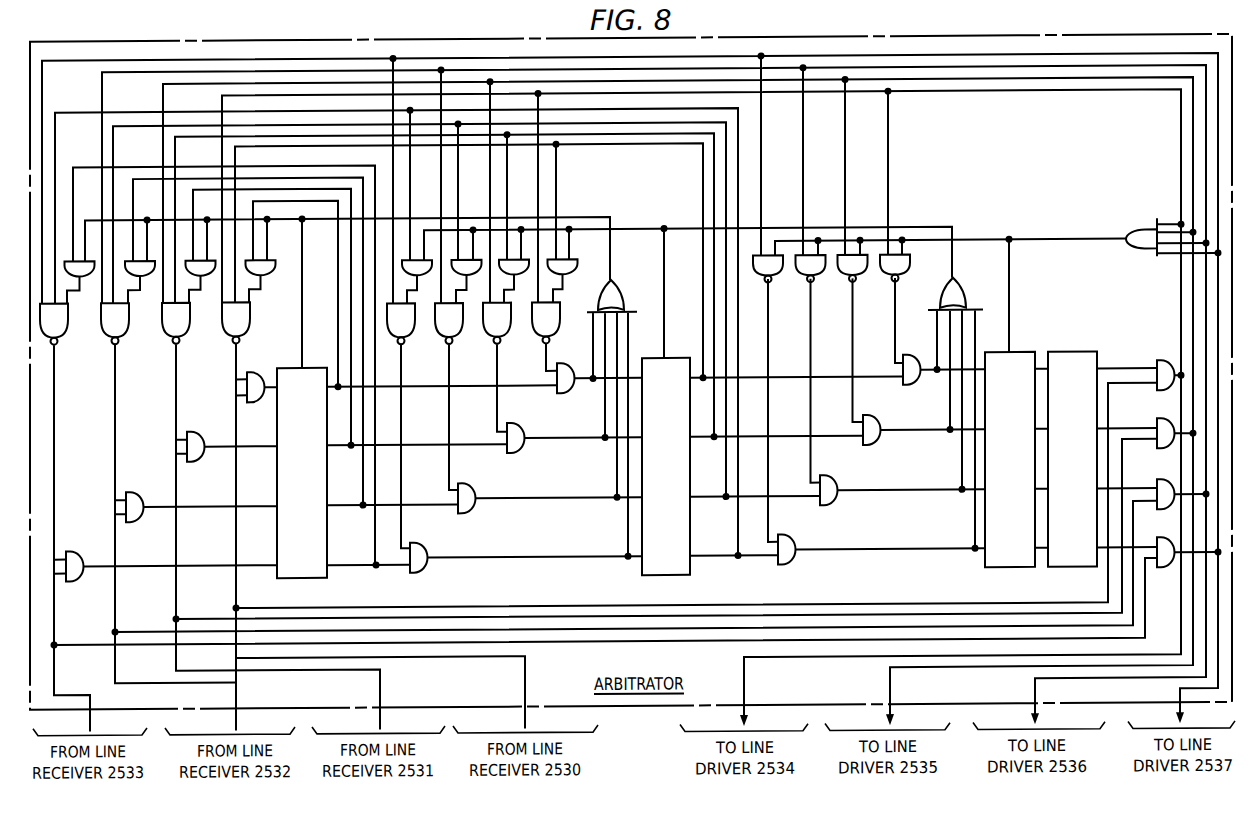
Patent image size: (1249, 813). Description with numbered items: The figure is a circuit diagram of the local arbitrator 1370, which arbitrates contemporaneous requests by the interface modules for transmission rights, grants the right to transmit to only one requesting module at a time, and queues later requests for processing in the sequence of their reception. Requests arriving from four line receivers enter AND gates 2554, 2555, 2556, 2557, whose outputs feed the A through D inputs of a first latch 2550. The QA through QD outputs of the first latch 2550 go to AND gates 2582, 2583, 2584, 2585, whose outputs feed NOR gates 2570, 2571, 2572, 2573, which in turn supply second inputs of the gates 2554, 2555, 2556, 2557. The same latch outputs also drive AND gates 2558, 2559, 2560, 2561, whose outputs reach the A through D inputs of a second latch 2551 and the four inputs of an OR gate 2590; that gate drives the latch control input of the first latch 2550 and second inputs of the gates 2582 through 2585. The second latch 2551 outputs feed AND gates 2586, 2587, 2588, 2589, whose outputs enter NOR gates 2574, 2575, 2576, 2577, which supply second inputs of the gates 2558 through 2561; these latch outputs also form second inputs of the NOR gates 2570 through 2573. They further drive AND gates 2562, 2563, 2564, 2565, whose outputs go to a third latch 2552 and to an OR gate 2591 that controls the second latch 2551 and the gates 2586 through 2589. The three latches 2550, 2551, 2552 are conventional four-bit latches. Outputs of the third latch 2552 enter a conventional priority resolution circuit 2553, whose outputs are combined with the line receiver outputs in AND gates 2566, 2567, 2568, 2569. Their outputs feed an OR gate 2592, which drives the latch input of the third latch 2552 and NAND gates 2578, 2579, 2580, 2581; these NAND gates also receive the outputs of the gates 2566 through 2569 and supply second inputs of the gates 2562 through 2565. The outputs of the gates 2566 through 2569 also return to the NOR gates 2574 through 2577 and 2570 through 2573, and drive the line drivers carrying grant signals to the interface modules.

The arbitrator 1370 is at (140, 42).
The first latch 2550 is at (297, 577).
The second latch 2551 is at (663, 572).
The third latch 2552 is at (1009, 566).
The priority resolution circuit 2553 is at (1067, 366).
The AND gate 2554 is at (262, 366).
The AND gate 2555 is at (201, 464).
The AND gate 2556 is at (140, 524).
The AND gate 2557 is at (80, 583).
The AND gate 2558 is at (572, 398).
The AND gate 2559 is at (522, 457).
The AND gate 2560 is at (472, 517).
The AND gate 2561 is at (424, 576).
The AND gate 2562 is at (918, 392).
The AND gate 2563 is at (880, 452).
The AND gate 2564 is at (839, 512).
The AND gate 2565 is at (796, 571).
The AND gate 2566 is at (1168, 367).
The AND gate 2567 is at (1168, 426).
The AND gate 2568 is at (1168, 487).
The AND gate 2569 is at (1168, 545).
The NOR gate 2570 is at (251, 326).
The NOR gate 2571 is at (180, 347).
The NOR gate 2572 is at (119, 347).
The NOR gate 2573 is at (58, 347).
The NOR gate 2574 is at (549, 347).
The NOR gate 2575 is at (498, 349).
The NOR gate 2576 is at (450, 349).
The NOR gate 2577 is at (402, 349).
The NAND gate 2578 is at (899, 287).
The NAND gate 2579 is at (856, 287).
The NAND gate 2580 is at (814, 287).
The NAND gate 2581 is at (771, 287).
The AND gate 2582 is at (268, 279).
The AND gate 2583 is at (211, 279).
The AND gate 2584 is at (150, 279).
The AND gate 2585 is at (89, 279).
The AND gate 2586 is at (575, 277).
The AND gate 2587 is at (527, 280).
The AND gate 2588 is at (477, 280).
The AND gate 2589 is at (428, 280).
The OR gate 2590 is at (625, 293).
The OR gate 2591 is at (968, 293).
The OR gate 2592 is at (1150, 232).